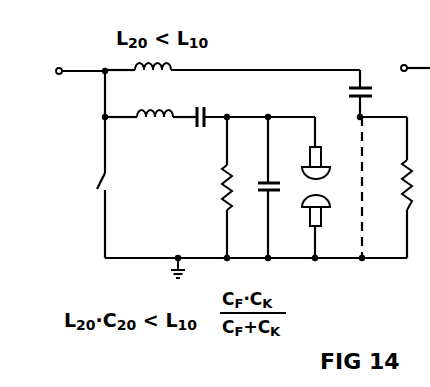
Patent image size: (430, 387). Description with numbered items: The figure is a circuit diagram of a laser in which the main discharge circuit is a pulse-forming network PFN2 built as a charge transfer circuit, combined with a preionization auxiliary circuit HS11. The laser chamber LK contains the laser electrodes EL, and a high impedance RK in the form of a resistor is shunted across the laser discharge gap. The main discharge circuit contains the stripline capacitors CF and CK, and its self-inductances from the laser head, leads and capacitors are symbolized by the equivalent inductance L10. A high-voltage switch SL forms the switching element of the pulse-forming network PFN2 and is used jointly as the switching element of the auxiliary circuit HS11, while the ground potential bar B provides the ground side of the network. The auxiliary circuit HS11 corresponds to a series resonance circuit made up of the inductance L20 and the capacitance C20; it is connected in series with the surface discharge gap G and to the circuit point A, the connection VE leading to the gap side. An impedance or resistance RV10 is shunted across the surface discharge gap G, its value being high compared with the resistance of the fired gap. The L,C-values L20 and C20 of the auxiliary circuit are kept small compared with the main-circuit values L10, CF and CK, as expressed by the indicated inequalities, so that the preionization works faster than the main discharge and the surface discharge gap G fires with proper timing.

The circuit point A* A is at (233, 81).
The inductance of auxiliary circuit L20 is at (165, 77).
The equivalent inductance L10 is at (152, 124).
The stripline capacitor CF is at (199, 106).
The preionization auxiliary circuit HS11 is at (290, 104).
The connection VE is at (340, 58).
The capacitance of auxiliary circuit C20 is at (349, 93).
The high-voltage switch SL is at (108, 181).
The pulse-forming network PFN2 is at (180, 250).
The ground potential bar B is at (176, 261).
The high impedance RK is at (220, 188).
The stripline capacitor CK is at (258, 186).
The laser electrodes EL is at (303, 173).
The laser chamber LK is at (316, 190).
The surface discharge gap G is at (388, 182).
The impedance or resistance RV10 is at (404, 190).